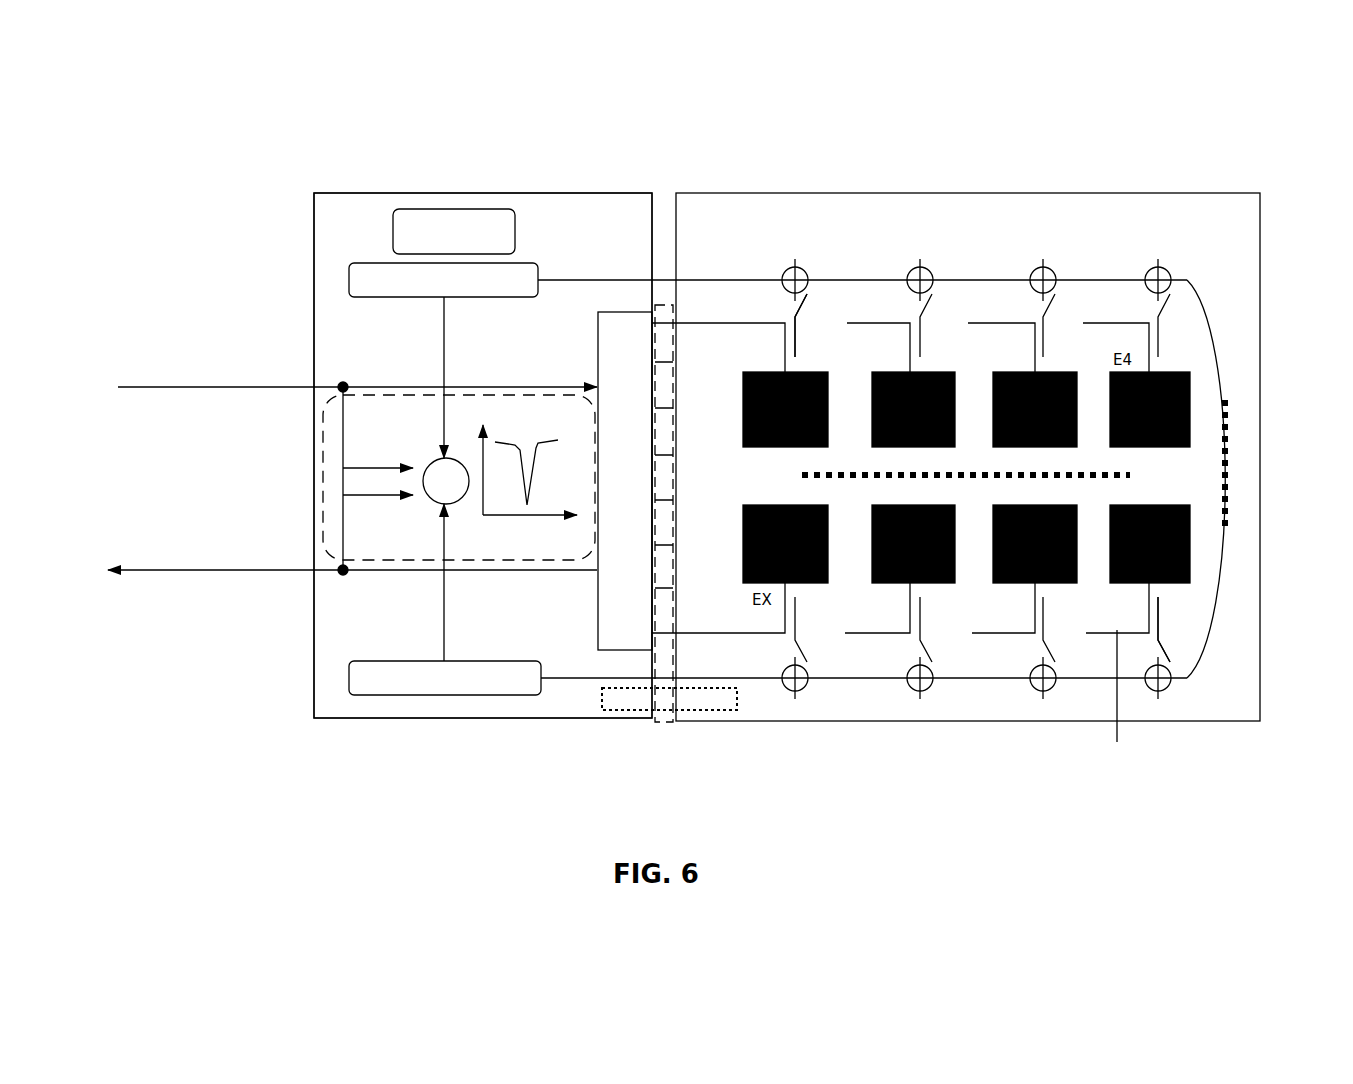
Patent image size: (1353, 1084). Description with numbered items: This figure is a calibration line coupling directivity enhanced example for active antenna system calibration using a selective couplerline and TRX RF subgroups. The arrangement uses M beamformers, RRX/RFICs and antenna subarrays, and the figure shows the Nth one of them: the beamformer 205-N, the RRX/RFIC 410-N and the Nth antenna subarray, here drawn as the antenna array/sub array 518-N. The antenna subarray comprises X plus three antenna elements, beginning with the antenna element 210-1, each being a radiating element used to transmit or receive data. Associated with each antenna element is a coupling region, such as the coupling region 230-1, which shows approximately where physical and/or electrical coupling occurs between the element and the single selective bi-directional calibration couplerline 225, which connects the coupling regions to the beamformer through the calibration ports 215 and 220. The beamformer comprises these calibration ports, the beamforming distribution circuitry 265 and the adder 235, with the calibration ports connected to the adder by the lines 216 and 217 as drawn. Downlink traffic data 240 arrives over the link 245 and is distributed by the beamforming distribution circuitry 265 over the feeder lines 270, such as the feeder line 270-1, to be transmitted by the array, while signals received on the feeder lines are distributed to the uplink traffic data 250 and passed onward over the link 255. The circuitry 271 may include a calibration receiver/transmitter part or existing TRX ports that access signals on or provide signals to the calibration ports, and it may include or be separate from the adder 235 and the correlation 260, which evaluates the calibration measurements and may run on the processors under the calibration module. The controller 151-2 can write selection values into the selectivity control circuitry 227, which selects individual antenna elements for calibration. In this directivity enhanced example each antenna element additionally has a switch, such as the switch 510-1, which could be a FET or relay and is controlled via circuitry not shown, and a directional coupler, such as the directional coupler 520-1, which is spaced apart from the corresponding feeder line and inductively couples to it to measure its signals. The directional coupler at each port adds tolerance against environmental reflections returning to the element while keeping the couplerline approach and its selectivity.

The beamformer 205-N is at (386, 168).
The RRX/RFIC 410-N is at (553, 168).
The antenna array/sub array N 518-N is at (1150, 204).
The controller 151-2 is at (400, 247).
The calibration port 215 is at (468, 298).
The calibration signal line from port 1 216 is at (444, 327).
The selective bi-directional calibration couplerline 225 is at (592, 273).
The beamforming distribution circuitry 265 is at (602, 360).
The downlink traffic data 240 is at (130, 344).
The link 245 is at (195, 386).
The uplink traffic data 250 is at (130, 538).
The link 255 is at (218, 569).
The circuitry 271 is at (438, 400).
The adder 235 is at (437, 472).
The correlation 260 is at (513, 455).
The calibration port 220 is at (412, 657).
The calibration signal line from port 2 217 is at (443, 595).
The selectivity control circuitry 227 is at (705, 713).
The feeder lines 270 is at (656, 722).
The feeder line 270-1 is at (688, 328).
The antenna element 210-1 is at (775, 449).
The coupling region 230-1 is at (782, 271).
The switch 510-1 is at (818, 288).
The directional coupler 520-1 is at (810, 343).